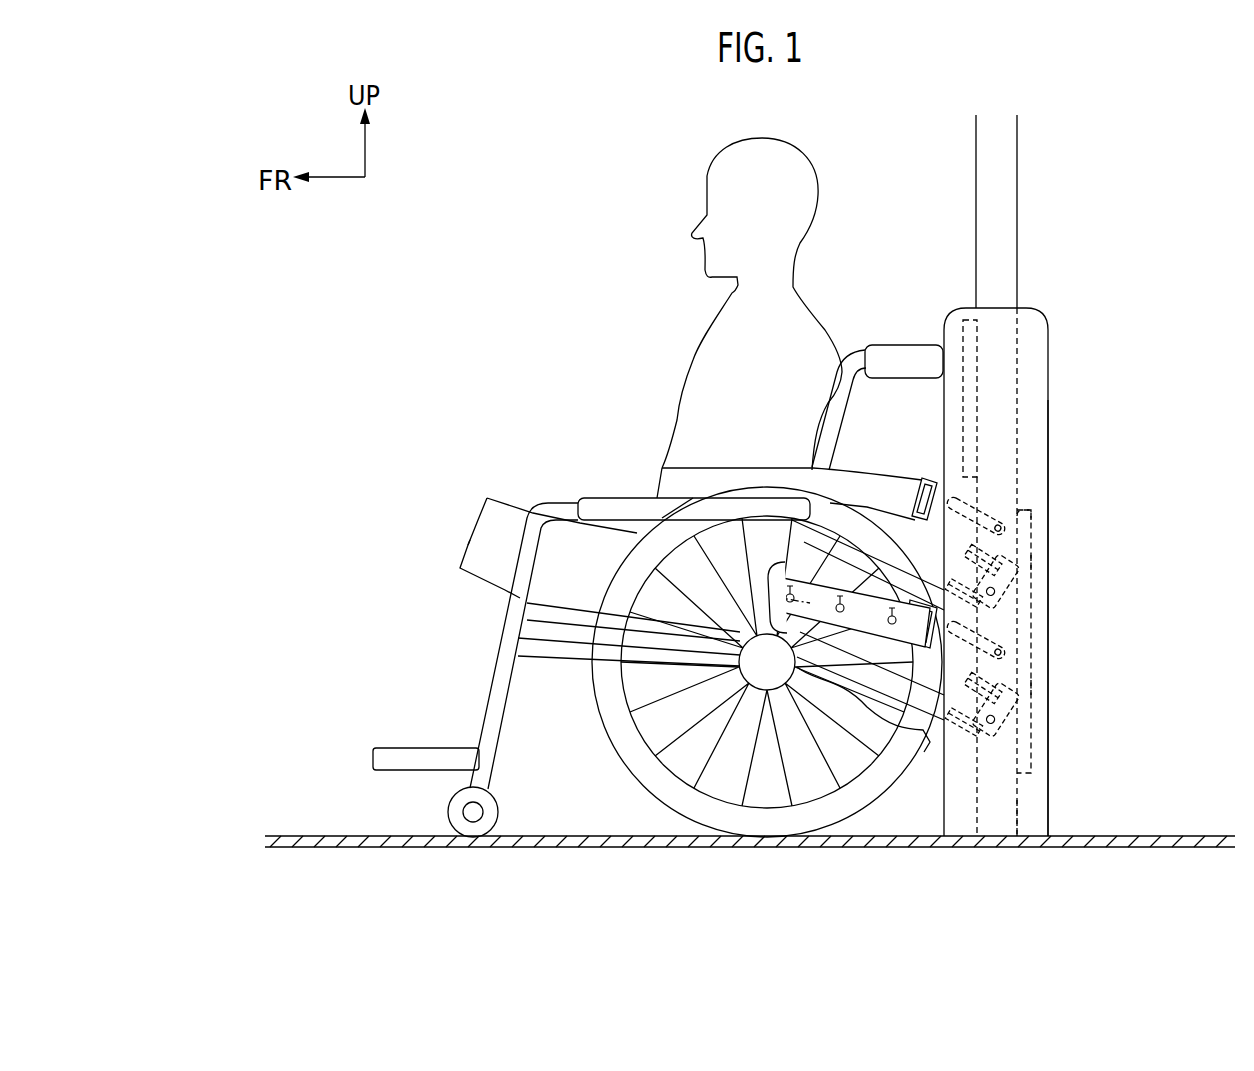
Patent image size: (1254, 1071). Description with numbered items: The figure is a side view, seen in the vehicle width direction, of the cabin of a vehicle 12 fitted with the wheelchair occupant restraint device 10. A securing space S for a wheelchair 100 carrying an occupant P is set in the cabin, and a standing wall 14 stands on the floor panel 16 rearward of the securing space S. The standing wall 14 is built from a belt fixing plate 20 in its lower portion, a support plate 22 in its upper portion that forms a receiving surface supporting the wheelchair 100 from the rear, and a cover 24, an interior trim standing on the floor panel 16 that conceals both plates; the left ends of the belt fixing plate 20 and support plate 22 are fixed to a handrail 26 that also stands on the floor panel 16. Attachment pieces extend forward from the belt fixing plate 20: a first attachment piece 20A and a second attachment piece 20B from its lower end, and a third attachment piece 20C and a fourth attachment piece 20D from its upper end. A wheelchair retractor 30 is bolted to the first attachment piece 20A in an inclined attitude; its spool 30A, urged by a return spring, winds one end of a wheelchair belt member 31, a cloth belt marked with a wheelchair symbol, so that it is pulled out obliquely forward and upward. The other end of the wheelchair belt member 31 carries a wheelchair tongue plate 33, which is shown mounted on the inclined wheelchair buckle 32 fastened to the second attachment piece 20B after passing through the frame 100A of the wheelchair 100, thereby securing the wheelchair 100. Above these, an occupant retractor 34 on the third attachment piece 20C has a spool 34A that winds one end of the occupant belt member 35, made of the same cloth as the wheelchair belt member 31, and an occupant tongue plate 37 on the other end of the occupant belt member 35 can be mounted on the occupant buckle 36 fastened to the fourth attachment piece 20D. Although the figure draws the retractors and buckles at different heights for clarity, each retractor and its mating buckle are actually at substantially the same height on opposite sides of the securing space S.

The wheelchair occupant restraint device 10 is at (1095, 440).
The vehicle 12 is at (1103, 172).
The standing wall 14 is at (1060, 318).
The floor panel 16 is at (1178, 836).
The belt fixing plate 20 is at (1042, 737).
The first attachment piece 20A is at (1040, 815).
The second attachment piece 20B is at (1022, 685).
The third attachment piece 20C is at (1022, 560).
The fourth attachment piece 20D is at (1035, 515).
The support plate 22 is at (960, 325).
The cover 24 is at (1062, 395).
The handrail 26 is at (1018, 148).
The wheelchair retractor 30 is at (980, 760).
The spool 30A is at (955, 760).
The wheelchair belt member 31 is at (830, 625).
The wheelchair buckle 32 is at (1008, 650).
The wheelchair tongue plate 33 is at (888, 580).
The occupant retractor 34 is at (1012, 590).
The spool 34A is at (1008, 532).
The occupant belt member 35 is at (691, 466).
The occupant buckle 36 is at (950, 500).
The occupant tongue plate 37 is at (925, 478).
The wheelchair 100 is at (600, 482).
The frame 100A is at (832, 402).
The occupant P is at (716, 155).
The securing space S is at (433, 600).